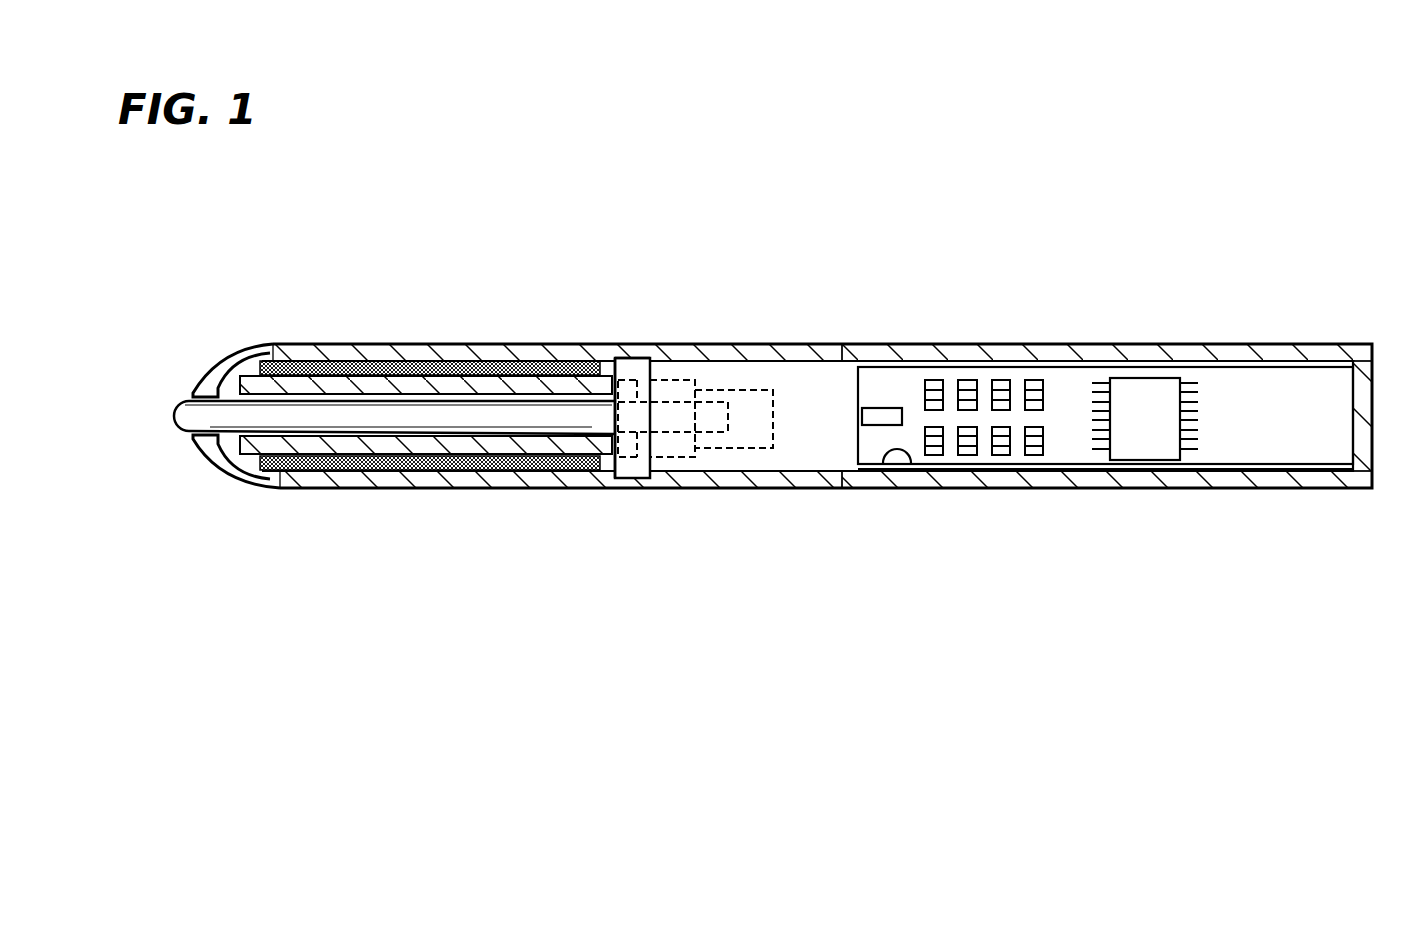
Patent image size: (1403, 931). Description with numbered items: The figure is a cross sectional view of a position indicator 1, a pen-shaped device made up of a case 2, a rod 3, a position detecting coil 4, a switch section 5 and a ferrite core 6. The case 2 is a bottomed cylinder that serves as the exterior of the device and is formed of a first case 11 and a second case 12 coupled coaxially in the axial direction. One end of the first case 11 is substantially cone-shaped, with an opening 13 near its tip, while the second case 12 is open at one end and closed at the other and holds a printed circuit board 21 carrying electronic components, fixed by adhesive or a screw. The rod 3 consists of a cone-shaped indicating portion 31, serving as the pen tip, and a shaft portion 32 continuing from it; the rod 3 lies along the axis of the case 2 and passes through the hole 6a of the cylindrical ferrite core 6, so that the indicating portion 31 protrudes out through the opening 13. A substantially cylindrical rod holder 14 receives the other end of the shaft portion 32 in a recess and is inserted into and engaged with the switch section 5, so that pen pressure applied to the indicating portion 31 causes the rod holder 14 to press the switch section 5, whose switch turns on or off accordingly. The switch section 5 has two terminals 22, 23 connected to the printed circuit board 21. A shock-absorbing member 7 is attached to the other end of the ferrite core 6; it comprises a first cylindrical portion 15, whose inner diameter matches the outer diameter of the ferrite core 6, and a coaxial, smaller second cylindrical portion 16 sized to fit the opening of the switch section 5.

The position indicator 1 is at (1307, 292).
The case 2 is at (1038, 338).
The rod 3 is at (482, 472).
The position detecting coil 4 is at (343, 358).
The switch section 5 is at (800, 375).
The ferrite core 6 is at (515, 383).
The hole 6a is at (440, 395).
The shock-absorbing member 7 is at (632, 478).
The first case 11 is at (643, 358).
The second case 12 is at (938, 365).
The opening 13 is at (197, 433).
The rod holder 14 is at (760, 389).
The first cylindrical portion 15 is at (625, 358).
The second cylindrical portion 16 is at (683, 378).
The printed circuit board 21 is at (1242, 377).
The terminal 22 is at (908, 462).
The terminal 23 is at (882, 408).
The indicating portion 31 is at (190, 395).
The shaft portion 32 is at (418, 472).